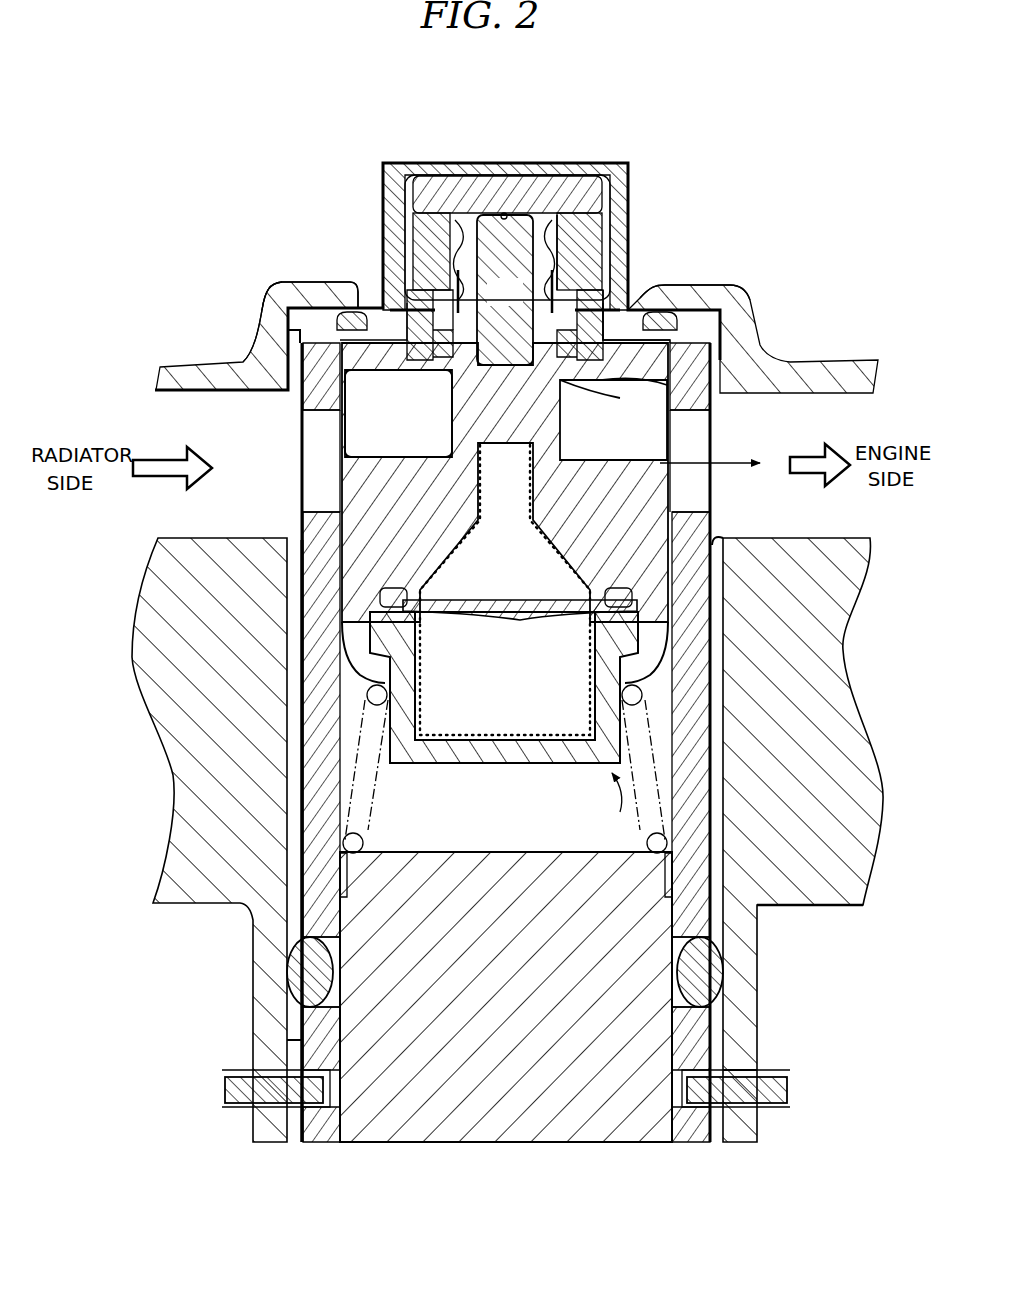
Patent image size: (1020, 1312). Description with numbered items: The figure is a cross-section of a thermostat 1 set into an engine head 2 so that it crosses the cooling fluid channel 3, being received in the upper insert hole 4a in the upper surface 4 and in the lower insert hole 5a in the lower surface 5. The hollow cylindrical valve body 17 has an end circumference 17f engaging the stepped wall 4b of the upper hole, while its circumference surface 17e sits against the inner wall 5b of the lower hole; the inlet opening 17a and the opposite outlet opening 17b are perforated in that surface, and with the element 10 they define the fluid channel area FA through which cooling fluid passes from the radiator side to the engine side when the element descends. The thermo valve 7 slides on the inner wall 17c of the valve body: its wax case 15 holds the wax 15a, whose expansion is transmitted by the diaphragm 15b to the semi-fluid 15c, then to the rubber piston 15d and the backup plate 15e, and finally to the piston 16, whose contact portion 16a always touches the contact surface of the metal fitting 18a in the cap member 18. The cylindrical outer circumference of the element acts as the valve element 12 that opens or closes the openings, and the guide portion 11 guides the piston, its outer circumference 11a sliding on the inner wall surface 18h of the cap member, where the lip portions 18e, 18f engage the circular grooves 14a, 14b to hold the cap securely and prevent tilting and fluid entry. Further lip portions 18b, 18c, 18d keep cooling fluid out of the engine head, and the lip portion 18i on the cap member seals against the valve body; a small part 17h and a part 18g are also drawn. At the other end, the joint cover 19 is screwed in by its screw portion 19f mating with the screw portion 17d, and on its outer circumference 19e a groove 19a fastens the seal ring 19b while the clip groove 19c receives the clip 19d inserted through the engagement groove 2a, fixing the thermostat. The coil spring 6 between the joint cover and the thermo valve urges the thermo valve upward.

The thermostat 1 is at (262, 172).
The engine head 2 is at (840, 368).
The engagement groove 2a is at (745, 1072).
The cooling fluid channel 3 is at (190, 496).
The upper surface 4 is at (172, 390).
The upper insert hole 4a is at (262, 360).
The stepped wall 4b is at (300, 283).
The lower surface 5 is at (175, 538).
The lower insert hole 5a is at (722, 538).
The inner wall 5b is at (348, 836).
The coil spring 6 is at (618, 800).
The thermo valve 7 is at (644, 769).
The element 10 is at (632, 476).
The guide portion 11 is at (622, 215).
The outer circumference 11a is at (450, 408).
The valve element 12 is at (340, 479).
The circular groove 14a is at (620, 292).
The circular groove 14b is at (665, 360).
The wax case 15 is at (608, 745).
The wax 15a is at (530, 712).
The diaphragm 15b is at (503, 622).
The semi-fluid 15c is at (487, 596).
The rubber piston 15d is at (548, 432).
The backup plate 15e is at (512, 456).
The piston 16 is at (492, 305).
The contact portion 16a is at (503, 212).
The valve body 17 is at (628, 262).
The inlet opening 17a is at (320, 412).
The outlet opening 17b is at (700, 420).
The inner wall 17c is at (358, 772).
The screw portion 17d is at (345, 886).
The circumference surface 17e is at (310, 838).
The end circumference 17f is at (445, 262).
The frame tab 17h is at (325, 318).
The cap member 18 is at (395, 185).
The metal fitting 18a is at (575, 213).
The lip portion 18b is at (400, 195).
The lip portion 18c is at (358, 295).
The lip portion 18d is at (350, 318).
The lip portion 18e is at (430, 195).
The lip portion 18f is at (462, 290).
The cap guide 18g is at (530, 215).
The inner wall surface 18h is at (618, 210).
The lip portion 18i is at (705, 330).
The joint cover 19 is at (490, 1080).
The groove 19a is at (322, 972).
The seal ring 19b is at (712, 972).
The clip groove 19c is at (335, 1089).
The clip 19d is at (790, 1092).
The outer circumference 19e is at (285, 1040).
The screw portion 19f is at (690, 886).
The fluid channel area FA is at (627, 410).